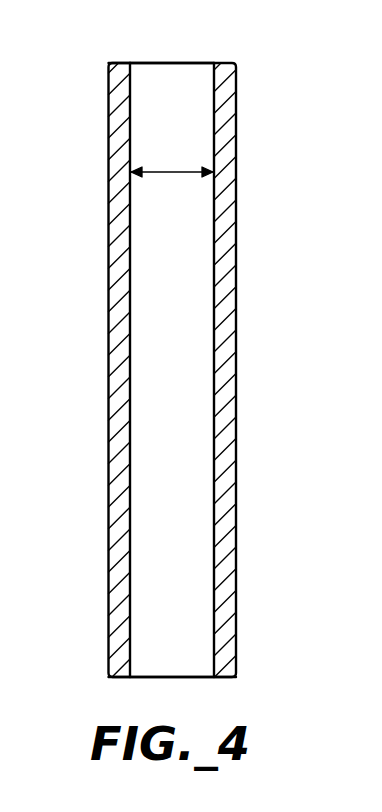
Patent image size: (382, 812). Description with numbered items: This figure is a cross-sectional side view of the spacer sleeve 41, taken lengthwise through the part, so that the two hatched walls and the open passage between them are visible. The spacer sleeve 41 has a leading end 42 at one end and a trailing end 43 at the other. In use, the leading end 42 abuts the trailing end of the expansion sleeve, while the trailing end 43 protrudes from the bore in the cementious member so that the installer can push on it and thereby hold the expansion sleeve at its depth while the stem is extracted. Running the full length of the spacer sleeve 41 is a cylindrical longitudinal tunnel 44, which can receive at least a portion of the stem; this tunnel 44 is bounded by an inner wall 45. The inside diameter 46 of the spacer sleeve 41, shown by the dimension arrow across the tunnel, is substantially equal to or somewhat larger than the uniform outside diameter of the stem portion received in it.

The spacer sleeve 41 is at (237, 202).
The leading end 42 is at (218, 680).
The trailing end 43 is at (123, 62).
The cylindrical longitudinal tunnel 44 is at (202, 78).
The inner wall 45 is at (195, 126).
The inside diameter 46 is at (163, 172).